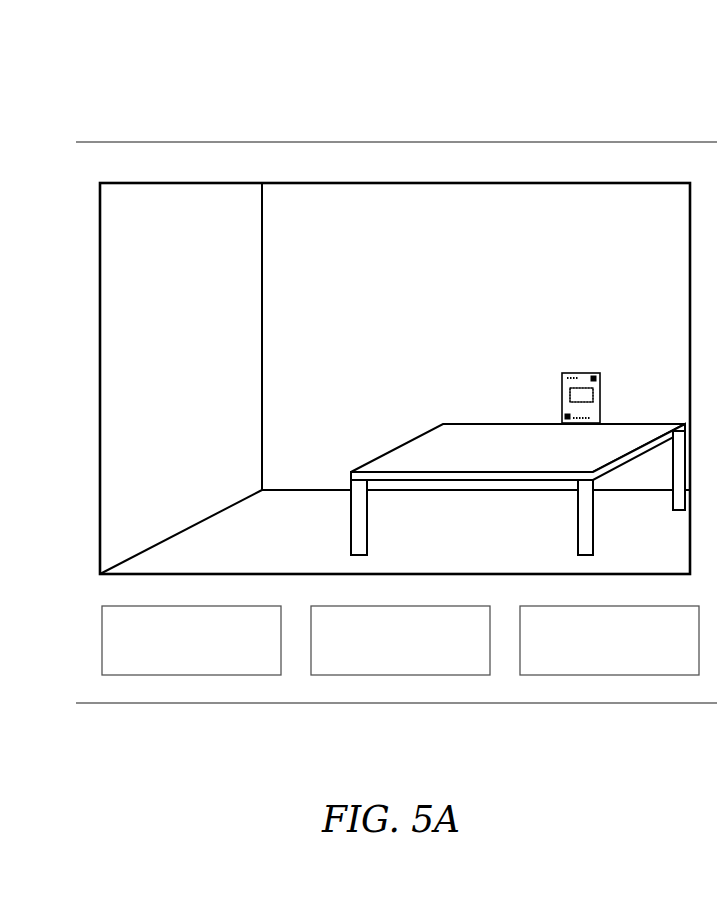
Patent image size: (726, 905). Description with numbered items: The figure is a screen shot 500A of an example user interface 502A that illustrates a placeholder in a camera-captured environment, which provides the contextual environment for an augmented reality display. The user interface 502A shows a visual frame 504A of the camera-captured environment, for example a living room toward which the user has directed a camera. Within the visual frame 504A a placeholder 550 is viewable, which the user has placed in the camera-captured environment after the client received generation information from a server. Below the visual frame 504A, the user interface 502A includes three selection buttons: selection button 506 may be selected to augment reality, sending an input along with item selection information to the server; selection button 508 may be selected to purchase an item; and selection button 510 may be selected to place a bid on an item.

The screen shot 500A is at (492, 117).
The user interface 502A is at (241, 142).
The visual frame 504A is at (279, 183).
The selection button 506 is at (190, 609).
The selection button 508 is at (398, 608).
The selection button 510 is at (610, 608).
The placeholder 550 is at (573, 374).